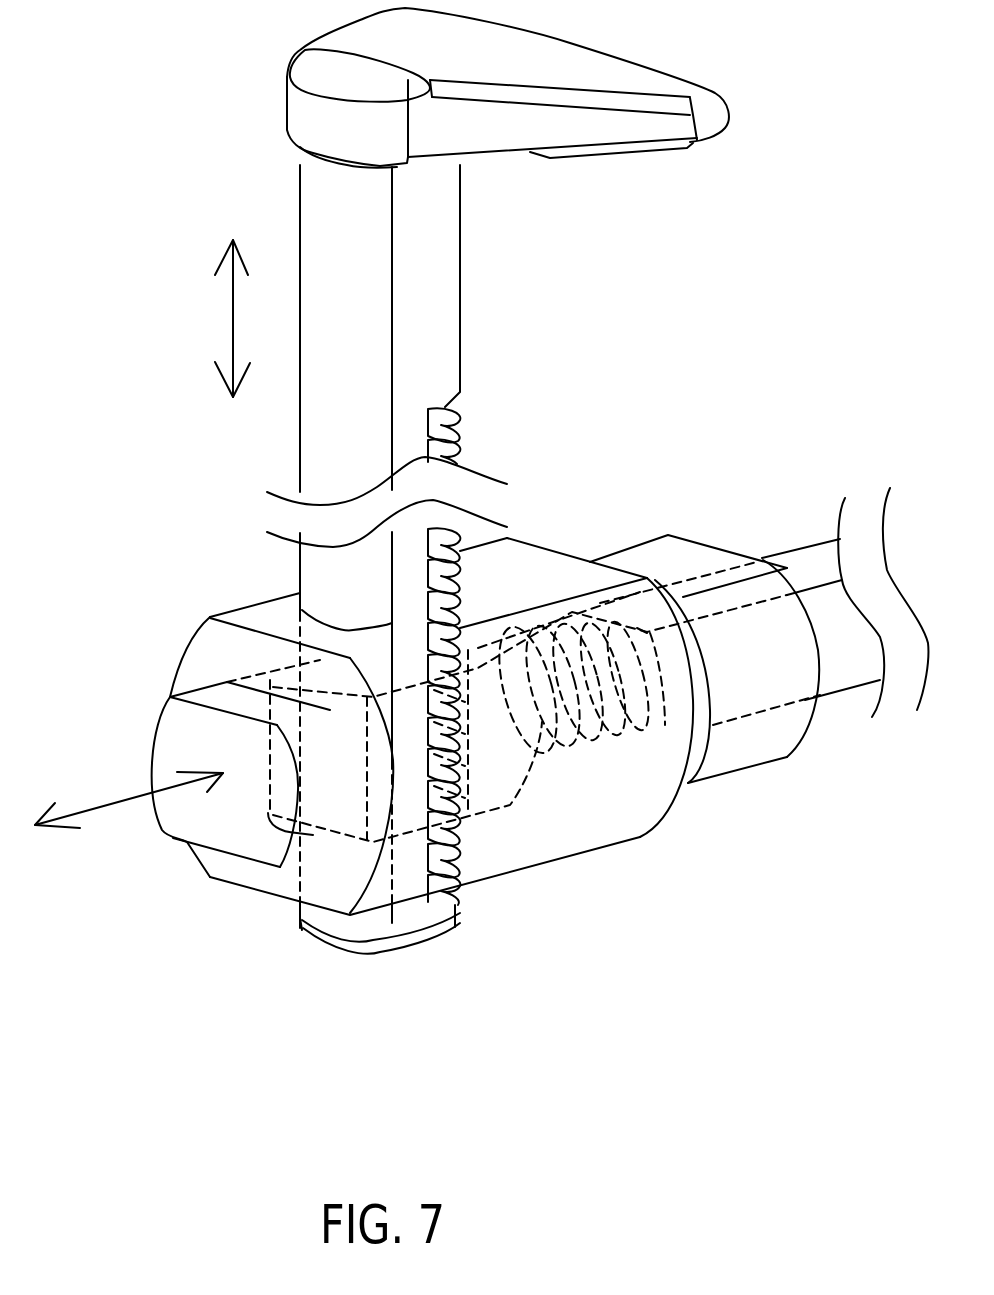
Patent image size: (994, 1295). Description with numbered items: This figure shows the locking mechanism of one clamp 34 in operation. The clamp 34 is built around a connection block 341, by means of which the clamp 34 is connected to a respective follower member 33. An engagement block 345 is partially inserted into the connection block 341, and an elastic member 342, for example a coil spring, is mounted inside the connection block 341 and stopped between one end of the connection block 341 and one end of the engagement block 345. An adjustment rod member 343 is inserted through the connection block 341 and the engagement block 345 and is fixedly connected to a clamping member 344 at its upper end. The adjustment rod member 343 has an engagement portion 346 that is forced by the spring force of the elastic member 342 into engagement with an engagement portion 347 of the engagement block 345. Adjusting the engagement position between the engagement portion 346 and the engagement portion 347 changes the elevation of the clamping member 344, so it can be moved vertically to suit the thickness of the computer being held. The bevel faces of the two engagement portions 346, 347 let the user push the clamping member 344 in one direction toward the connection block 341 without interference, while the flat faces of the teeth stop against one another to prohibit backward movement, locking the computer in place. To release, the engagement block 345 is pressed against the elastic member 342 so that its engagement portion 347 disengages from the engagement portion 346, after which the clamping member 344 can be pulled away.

The clamp 34 is at (88, 31).
The follower member 33 is at (798, 548).
The connection block 341 is at (623, 547).
The elastic member 342 is at (587, 743).
The adjustment rod member 343 is at (460, 275).
The clamping member 344 is at (288, 100).
The engagement block 345 is at (147, 757).
The engagement portion 346 is at (460, 424).
The engagement portion 347 is at (470, 770).